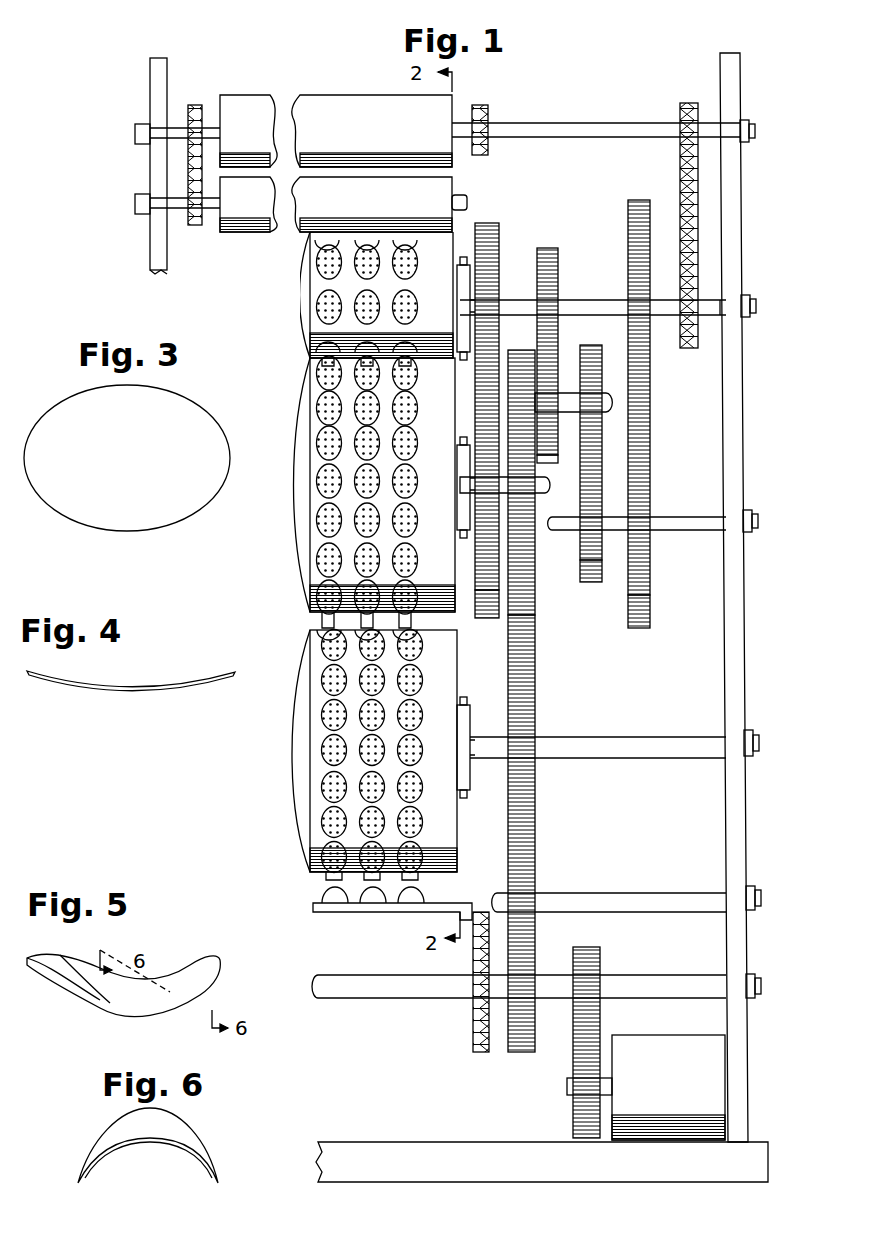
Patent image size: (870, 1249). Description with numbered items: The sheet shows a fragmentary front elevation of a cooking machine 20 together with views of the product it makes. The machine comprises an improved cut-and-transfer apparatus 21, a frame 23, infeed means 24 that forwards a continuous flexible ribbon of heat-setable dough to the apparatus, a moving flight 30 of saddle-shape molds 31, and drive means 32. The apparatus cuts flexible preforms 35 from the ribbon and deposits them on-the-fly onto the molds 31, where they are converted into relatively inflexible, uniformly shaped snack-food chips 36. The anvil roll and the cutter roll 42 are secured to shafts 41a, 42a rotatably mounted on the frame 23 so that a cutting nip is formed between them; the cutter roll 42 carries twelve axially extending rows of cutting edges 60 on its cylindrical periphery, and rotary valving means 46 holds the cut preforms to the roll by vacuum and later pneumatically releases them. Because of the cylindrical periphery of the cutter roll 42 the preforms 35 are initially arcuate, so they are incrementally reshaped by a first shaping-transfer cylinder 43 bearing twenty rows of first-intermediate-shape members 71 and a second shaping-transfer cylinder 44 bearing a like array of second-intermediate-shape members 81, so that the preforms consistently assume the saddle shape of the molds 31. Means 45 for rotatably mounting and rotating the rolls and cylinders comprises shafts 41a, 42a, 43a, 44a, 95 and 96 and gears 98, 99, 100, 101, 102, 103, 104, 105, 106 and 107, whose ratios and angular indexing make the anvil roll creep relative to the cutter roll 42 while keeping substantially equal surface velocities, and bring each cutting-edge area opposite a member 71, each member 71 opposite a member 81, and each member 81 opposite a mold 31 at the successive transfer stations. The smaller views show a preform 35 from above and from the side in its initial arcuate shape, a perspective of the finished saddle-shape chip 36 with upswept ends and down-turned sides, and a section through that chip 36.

In FIG. 1, the cooking machine 20 is at (772, 1052).
In FIG. 1, the cut-and-transfer apparatus 21 is at (282, 352).
In FIG. 1, the frame 23 is at (744, 818).
In FIG. 1, the infeed means 24 is at (237, 83).
In FIG. 1, the flight of molds 30 is at (306, 900).
In FIG. 1, the molds 31 is at (338, 905).
In FIG. 1, the drive means 32 is at (528, 1095).
In FIG. 3, the preform 35 is at (136, 471).
In FIG. 4, the preform 35 is at (167, 675).
In FIG. 5, the snack-food chip 36 is at (188, 972).
In FIG. 6, the snack-food chip 36 is at (176, 1128).
In FIG. 1, the shaft 41a is at (612, 298).
In FIG. 1, the cutter roll 42 is at (308, 254).
In FIG. 1, the shaft 42a is at (514, 298).
In FIG. 1, the first shaping-transfer cylinder 43 is at (305, 375).
In FIG. 1, the shaft 43a is at (546, 482).
In FIG. 1, the second shaping-transfer cylinder 44 is at (308, 705).
In FIG. 1, the shaft 44a is at (627, 740).
In FIG. 1, the means for rotatably mounting and rotating 45 is at (772, 254).
In FIG. 1, the rotary valving means 46 is at (458, 300).
In FIG. 1, the cutting edges 60 is at (318, 300).
In FIG. 1, the first-intermediate-shape members 71 is at (320, 480).
In FIG. 1, the second-intermediate-shape members 81 is at (322, 762).
In FIG. 1, the shaft 95 is at (607, 394).
In FIG. 1, the shaft 96 is at (672, 518).
In FIG. 1, the gear 98 is at (535, 703).
In FIG. 1, the gear 99 is at (533, 592).
In FIG. 1, the gear 100 is at (478, 618).
In FIG. 1, the gear 101 is at (486, 222).
In FIG. 1, the gear 102 is at (552, 248).
In FIG. 1, the gear 103 is at (555, 463).
In FIG. 1, the gear 104 is at (582, 348).
In FIG. 1, the gear 105 is at (610, 576).
In FIG. 1, the gear 106 is at (655, 600).
In FIG. 1, the gear 107 is at (640, 200).